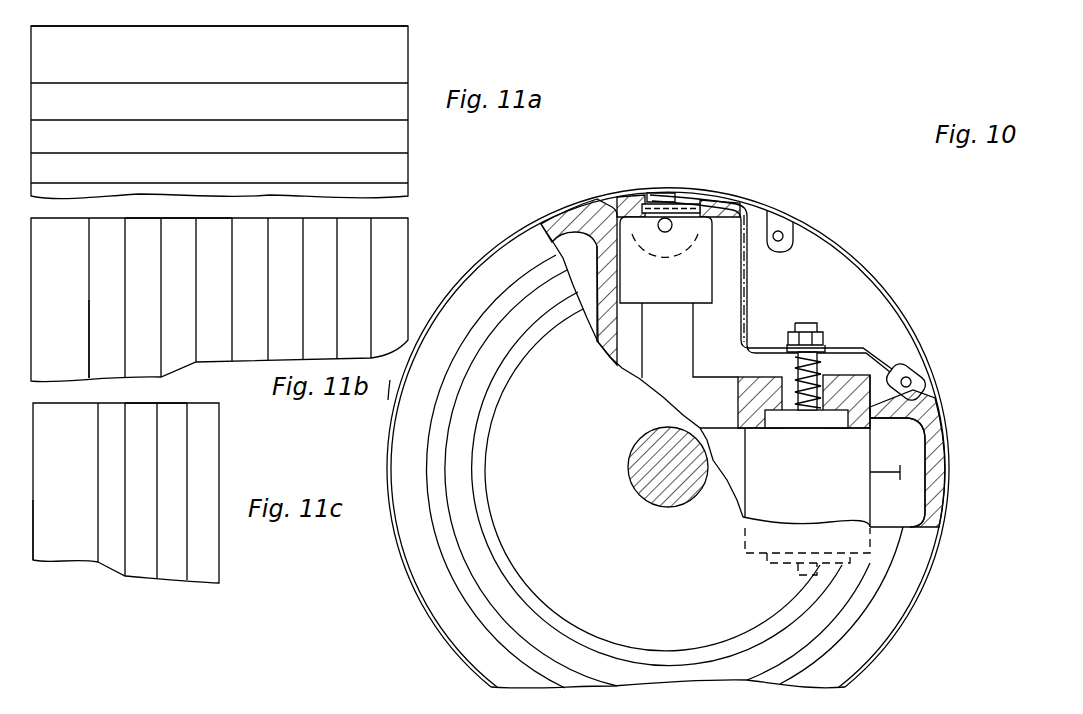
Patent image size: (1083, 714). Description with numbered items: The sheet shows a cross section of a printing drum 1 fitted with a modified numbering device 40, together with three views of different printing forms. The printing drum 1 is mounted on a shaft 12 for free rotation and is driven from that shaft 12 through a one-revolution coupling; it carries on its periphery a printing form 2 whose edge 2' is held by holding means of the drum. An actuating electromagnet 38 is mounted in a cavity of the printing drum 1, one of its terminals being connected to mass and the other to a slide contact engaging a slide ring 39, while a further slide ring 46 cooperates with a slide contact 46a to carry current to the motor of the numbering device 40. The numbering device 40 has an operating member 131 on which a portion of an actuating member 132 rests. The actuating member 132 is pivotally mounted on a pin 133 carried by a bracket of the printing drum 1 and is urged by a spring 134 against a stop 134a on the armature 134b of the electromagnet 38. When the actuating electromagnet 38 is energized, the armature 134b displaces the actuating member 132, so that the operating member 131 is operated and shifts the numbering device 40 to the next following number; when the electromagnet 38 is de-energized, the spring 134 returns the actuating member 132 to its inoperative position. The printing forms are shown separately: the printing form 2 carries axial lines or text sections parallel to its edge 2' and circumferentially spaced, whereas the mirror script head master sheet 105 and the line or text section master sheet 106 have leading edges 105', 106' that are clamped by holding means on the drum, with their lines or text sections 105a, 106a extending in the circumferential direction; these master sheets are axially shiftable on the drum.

In FIG. 10, the printing drum 1 is at (510, 267).
In FIG. 11A, the printing form 2 is at (237, 112).
In FIG. 10, the printing form 2 is at (380, 398).
In FIG. 11A, the edge of printing form 2' is at (241, 27).
In FIG. 10, the shaft 12 is at (640, 457).
In FIG. 10, the actuating electromagnet 38 is at (845, 477).
In FIG. 10, the slide ring 39 is at (468, 588).
In FIG. 10, the numbering device 40 is at (700, 244).
In FIG. 10, the slide ring 46 is at (887, 560).
In FIG. 10, the slide contact 46a is at (872, 480).
In FIG. 11C, the head master sheet 105 is at (156, 493).
In FIG. 11C, the leading edge of head master sheet 105' is at (192, 389).
In FIG. 11C, the lines or text sections of head master sheet 105a is at (67, 538).
In FIG. 11B, the line or text section master sheet 106 is at (245, 300).
In FIG. 11B, the leading edge of text section master sheet 106' is at (172, 209).
In FIG. 11B, the lines or text sections of text section master sheet 106a is at (100, 358).
In FIG. 10, the operating member 131 is at (678, 190).
In FIG. 10, the actuating member 132 is at (740, 233).
In FIG. 10, the pin 133 is at (912, 378).
In FIG. 10, the spring 134 is at (796, 386).
In FIG. 10, the stop 134a is at (842, 314).
In FIG. 10, the armature 134b is at (784, 370).